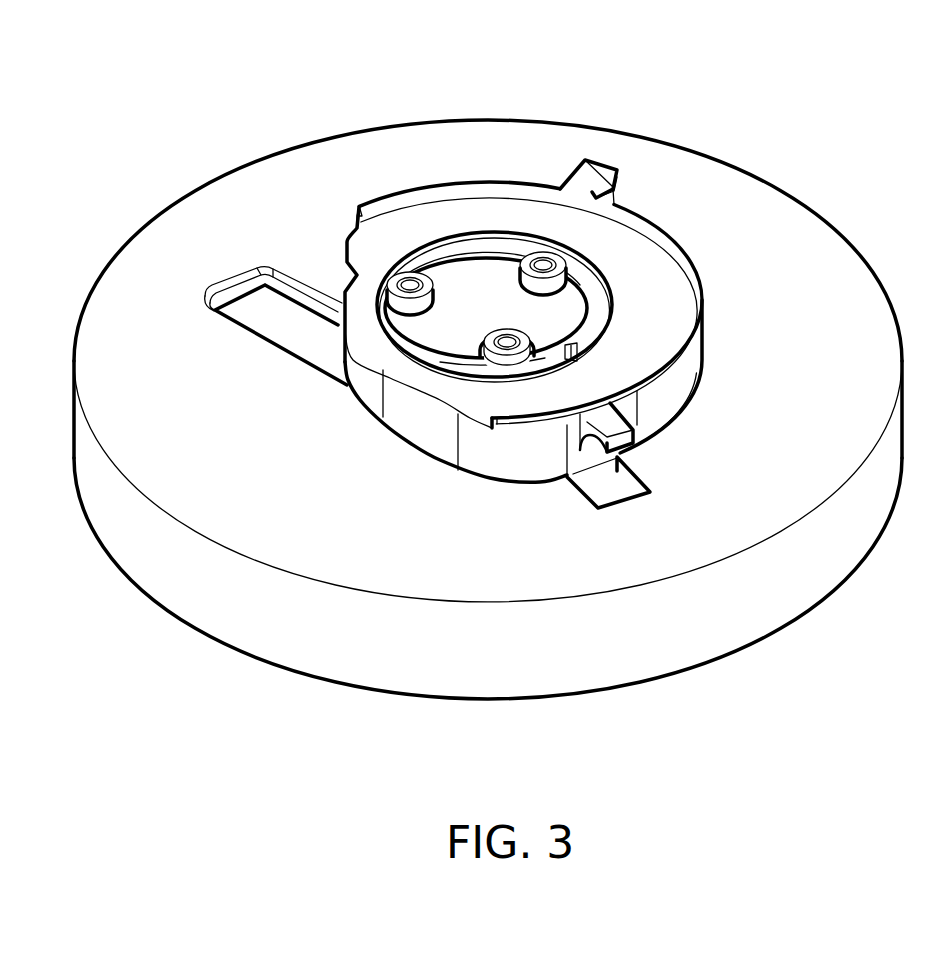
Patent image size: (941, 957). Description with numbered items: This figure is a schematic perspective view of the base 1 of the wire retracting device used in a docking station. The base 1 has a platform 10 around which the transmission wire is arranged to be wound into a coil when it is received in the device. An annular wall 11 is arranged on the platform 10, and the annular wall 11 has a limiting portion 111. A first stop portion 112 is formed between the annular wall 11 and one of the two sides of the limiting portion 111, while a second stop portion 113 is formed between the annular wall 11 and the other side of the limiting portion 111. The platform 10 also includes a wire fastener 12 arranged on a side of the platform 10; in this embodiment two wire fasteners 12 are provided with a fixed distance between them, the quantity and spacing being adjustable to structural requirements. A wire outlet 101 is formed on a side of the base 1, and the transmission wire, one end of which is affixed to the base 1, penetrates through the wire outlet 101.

The base 1 is at (252, 130).
The platform 10 is at (660, 327).
The annular wall 11 is at (437, 363).
The wire fastener 12 is at (598, 170).
The wire outlet 101 is at (335, 358).
The limiting portion 111 is at (600, 290).
The first stop portion 112 is at (538, 245).
The second stop portion 113 is at (578, 343).